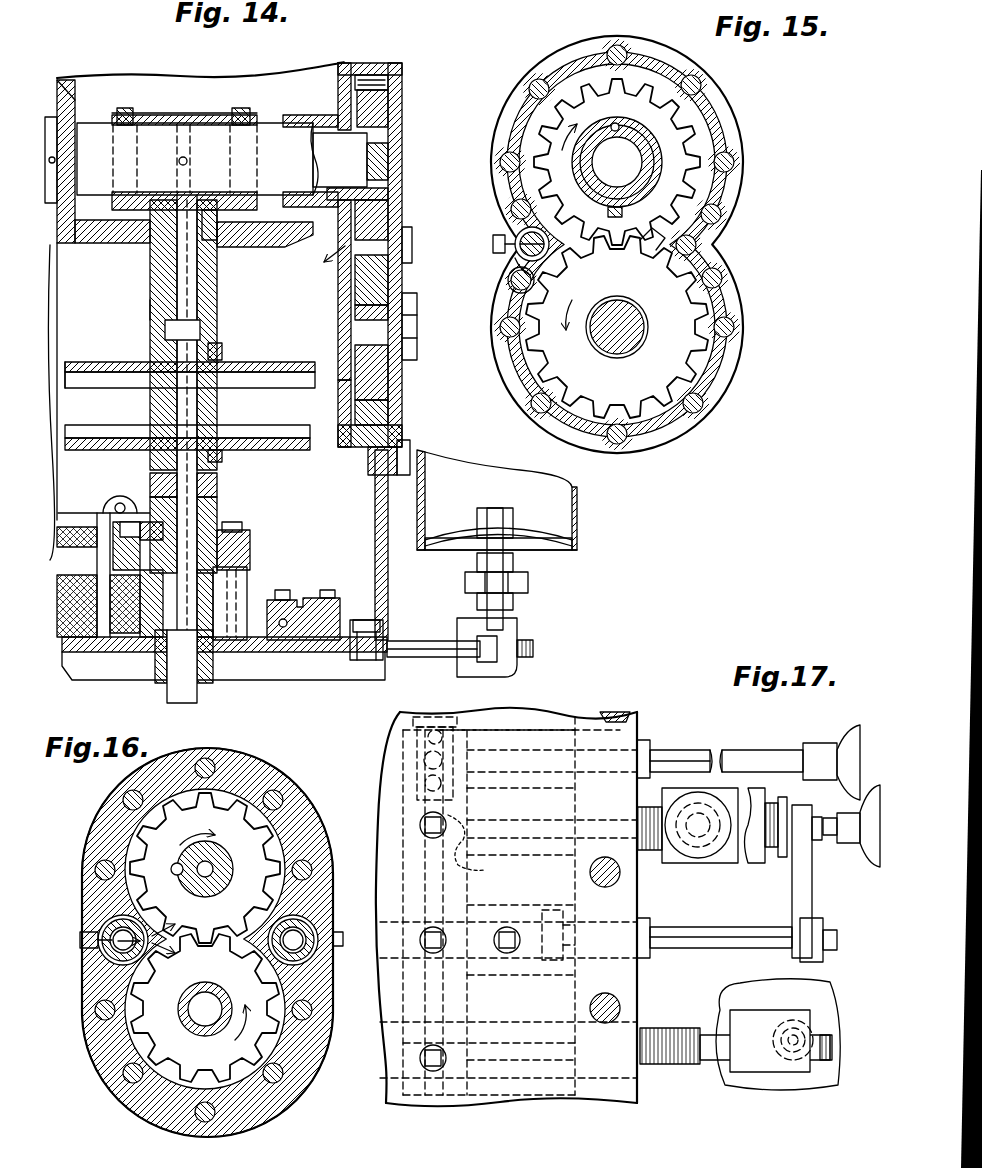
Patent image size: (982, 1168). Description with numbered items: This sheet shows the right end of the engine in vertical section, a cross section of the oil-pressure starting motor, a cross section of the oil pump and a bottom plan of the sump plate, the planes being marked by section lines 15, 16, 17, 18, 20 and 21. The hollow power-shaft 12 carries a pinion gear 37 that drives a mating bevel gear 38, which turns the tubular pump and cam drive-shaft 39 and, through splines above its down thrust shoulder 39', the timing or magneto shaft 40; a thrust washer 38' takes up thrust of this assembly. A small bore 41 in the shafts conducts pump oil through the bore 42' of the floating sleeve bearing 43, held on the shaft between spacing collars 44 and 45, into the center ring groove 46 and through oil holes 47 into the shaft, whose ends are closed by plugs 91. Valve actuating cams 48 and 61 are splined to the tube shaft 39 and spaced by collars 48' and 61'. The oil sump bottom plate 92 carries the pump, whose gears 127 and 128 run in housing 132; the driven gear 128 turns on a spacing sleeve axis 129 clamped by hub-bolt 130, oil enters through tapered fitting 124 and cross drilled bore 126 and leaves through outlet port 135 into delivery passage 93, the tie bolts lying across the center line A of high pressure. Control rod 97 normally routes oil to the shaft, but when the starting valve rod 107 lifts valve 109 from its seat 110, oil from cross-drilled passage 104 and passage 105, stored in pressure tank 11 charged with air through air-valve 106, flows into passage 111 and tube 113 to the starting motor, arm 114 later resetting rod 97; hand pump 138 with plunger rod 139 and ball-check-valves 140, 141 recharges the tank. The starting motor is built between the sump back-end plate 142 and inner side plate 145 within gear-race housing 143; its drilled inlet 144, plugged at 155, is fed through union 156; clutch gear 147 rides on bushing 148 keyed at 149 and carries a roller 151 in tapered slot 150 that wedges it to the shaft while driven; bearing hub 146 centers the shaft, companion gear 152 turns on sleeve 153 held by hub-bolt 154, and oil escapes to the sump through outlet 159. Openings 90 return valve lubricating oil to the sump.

In FIG. 14, the pressure tank 11 is at (576, 506).
In FIG. 14, the power-shaft 12 is at (342, 134).
In FIG. 14, the section line 15— 15 is at (352, 33).
In FIG. 14, the section line 16— 16 is at (78, 556).
In FIG. 14, the section line 17— 17 is at (420, 691).
In FIG. 17, the section line 18— 18 is at (380, 936).
In FIG. 17, the section line 20— 20 is at (430, 704).
In FIG. 17, the section line 21— 21 is at (402, 825).
In FIG. 14, the pinion gear 37 is at (78, 100).
In FIG. 14, the mating gear 38 is at (192, 335).
In FIG. 14, the thrust washer 38' is at (250, 203).
In FIG. 14, the pump and cam drive-shaft 39 is at (145, 398).
In FIG. 14, the down thrust shoulder 39' is at (209, 532).
In FIG. 14, the timing or magneto shaft 40 is at (172, 697).
In FIG. 14, the small bore 41 is at (183, 385).
In FIG. 14, the bore 42' is at (154, 417).
In FIG. 14, the floating sleeve bearing 43 is at (200, 113).
In FIG. 14, the spacing collar 44 is at (125, 108).
In FIG. 14, the spacing collar 45 is at (243, 108).
In FIG. 14, the center ring groove 46 is at (186, 115).
In FIG. 14, the oil holes 47 is at (180, 164).
In FIG. 14, the valve actuating cam 48 is at (90, 360).
In FIG. 14, the spacing collar 48' is at (238, 338).
In FIG. 14, the valve actuating cam 61 is at (187, 448).
In FIG. 14, the spacing collar 61' is at (237, 464).
In FIG. 17, the openings 90 is at (745, 1001).
In FIG. 14, the plugs 91 is at (378, 153).
In FIG. 14, the oil sump bottom plate 92 is at (105, 655).
In FIG. 17, the oil sump bottom plate 92 is at (622, 716).
In FIG. 14, the oil pump outlet passage 93 is at (232, 575).
In FIG. 17, the common rod 97 is at (835, 948).
In FIG. 17, the cross-drilled oil passage 104 is at (420, 1045).
In FIG. 17, the passage 105 is at (527, 1060).
In FIG. 14, the air-valve 106 is at (518, 647).
In FIG. 17, the air-valve 106 is at (850, 1036).
In FIG. 17, the starting valve rod 107 is at (830, 840).
In FIG. 17, the valve 109 is at (485, 850).
In FIG. 17, the valve seat 110 is at (452, 814).
In FIG. 17, the passage 111 is at (467, 839).
In FIG. 17, the tube 113 is at (700, 830).
In FIG. 14, the arm 114 is at (456, 643).
In FIG. 17, the arm 114 is at (792, 900).
In FIG. 14, the tapered tube fitting 124 is at (105, 514).
In FIG. 16, the cross drilled bore 126 is at (104, 950).
In FIG. 16, the pump gear 127 is at (148, 847).
In FIG. 16, the driven gear 128 is at (142, 983).
In FIG. 16, the spacing sleeve axis 129 is at (190, 1012).
In FIG. 16, the hub-bolt 130 is at (132, 1057).
In FIG. 16, the housing 132 is at (236, 1130).
In FIG. 16, the outlet port 135 is at (300, 1060).
In FIG. 17, the hand pump 138 is at (553, 760).
In FIG. 17, the plunger rod 139 is at (665, 758).
In FIG. 17, the ball-check-valve 140 is at (418, 718).
In FIG. 17, the ball-check-valve 141 is at (418, 753).
In FIG. 14, the sump back-end plate 142 is at (372, 222).
In FIG. 15, the motor gear-race housing 143 is at (640, 434).
In FIG. 15, the drilled inlet passage 144 is at (518, 270).
In FIG. 14, the inner side housing plate 145 is at (345, 400).
In FIG. 14, the bearing hub 146 is at (328, 94).
In FIG. 14, the motor clutch gear 147 is at (372, 280).
In FIG. 15, the motor clutch gear 147 is at (660, 140).
In FIG. 15, the bushing bearing 148 is at (648, 167).
In FIG. 15, the key 149 is at (622, 128).
In FIG. 15, the roller slot 150 is at (630, 210).
In FIG. 15, the roller 151 is at (703, 223).
In FIG. 14, the companion oil motor gear 152 is at (396, 405).
In FIG. 15, the companion oil motor gear 152 is at (667, 338).
In FIG. 15, the bearing sleeve 153 is at (646, 325).
In FIG. 14, the hub-bolt 154 is at (385, 383).
In FIG. 15, the plug 155 is at (500, 244).
In FIG. 15, the oil pressure inlet union 156 is at (526, 248).
In FIG. 15, the oil outlet 159 is at (668, 234).
In FIG. 16, the center line A— A is at (78, 942).